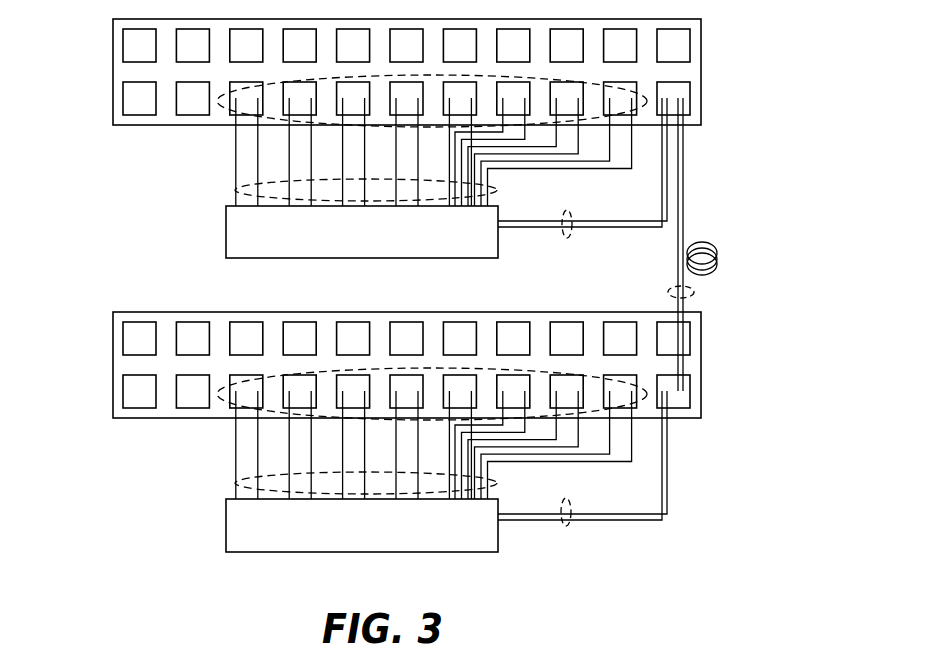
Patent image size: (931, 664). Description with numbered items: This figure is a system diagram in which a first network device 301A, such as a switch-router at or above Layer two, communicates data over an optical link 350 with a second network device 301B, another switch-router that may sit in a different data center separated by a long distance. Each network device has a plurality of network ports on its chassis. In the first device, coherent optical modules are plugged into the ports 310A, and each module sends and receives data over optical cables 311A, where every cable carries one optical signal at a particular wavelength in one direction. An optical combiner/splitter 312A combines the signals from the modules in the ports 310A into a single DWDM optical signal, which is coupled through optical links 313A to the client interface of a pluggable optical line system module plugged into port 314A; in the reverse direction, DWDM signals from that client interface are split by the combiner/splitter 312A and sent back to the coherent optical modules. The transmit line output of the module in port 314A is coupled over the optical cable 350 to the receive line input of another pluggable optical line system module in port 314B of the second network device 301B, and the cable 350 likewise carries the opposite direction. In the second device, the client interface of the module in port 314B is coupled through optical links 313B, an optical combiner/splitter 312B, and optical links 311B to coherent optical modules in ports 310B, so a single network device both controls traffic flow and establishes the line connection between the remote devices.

The first network device 301A is at (112, 62).
The ports 310A is at (226, 112).
The optical cables 311A is at (234, 190).
The optical combiner/splitter 312A is at (240, 258).
The optical links 313A is at (568, 238).
The port 314A is at (690, 98).
The second network device 301B is at (112, 355).
The ports 310B is at (226, 405).
The optical links 311B is at (234, 483).
The optical combiner/splitter 312B is at (240, 552).
The optical links 313B is at (569, 528).
The port 314B is at (690, 391).
The optical link 350 is at (694, 292).